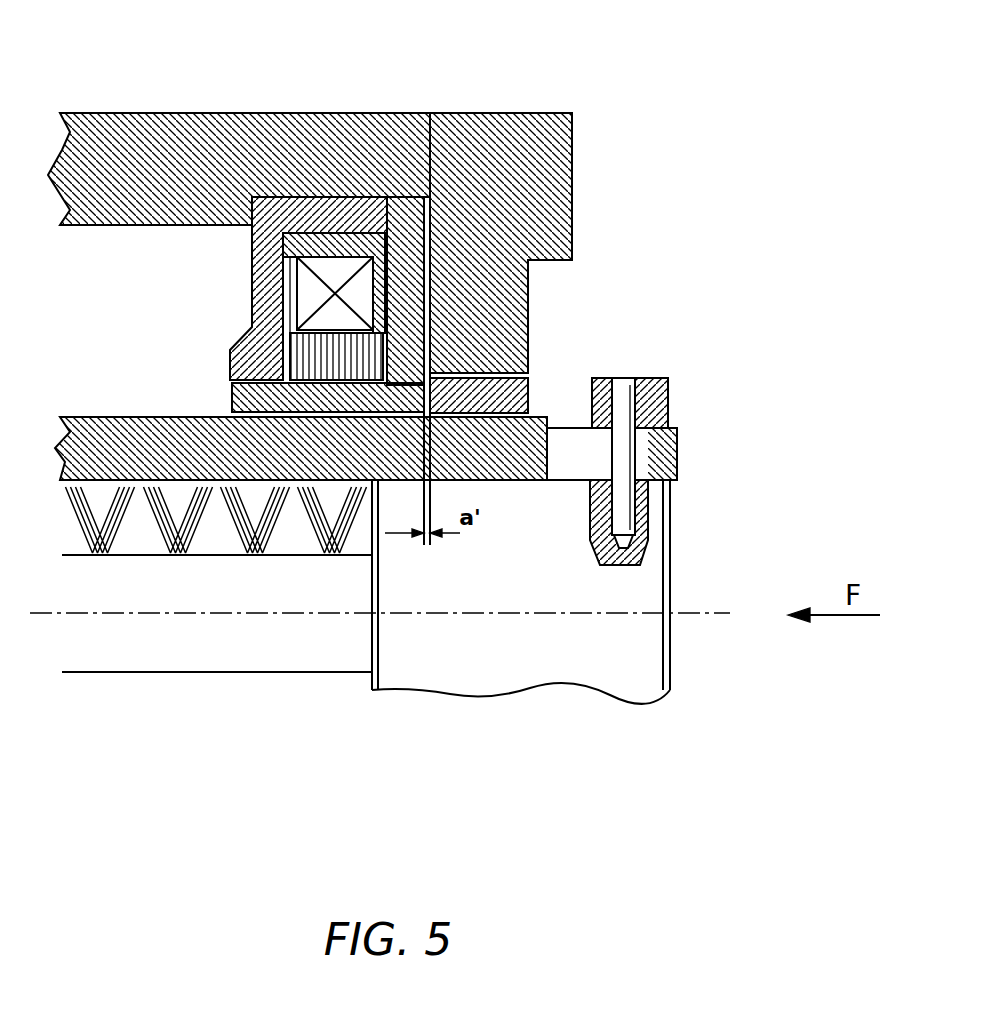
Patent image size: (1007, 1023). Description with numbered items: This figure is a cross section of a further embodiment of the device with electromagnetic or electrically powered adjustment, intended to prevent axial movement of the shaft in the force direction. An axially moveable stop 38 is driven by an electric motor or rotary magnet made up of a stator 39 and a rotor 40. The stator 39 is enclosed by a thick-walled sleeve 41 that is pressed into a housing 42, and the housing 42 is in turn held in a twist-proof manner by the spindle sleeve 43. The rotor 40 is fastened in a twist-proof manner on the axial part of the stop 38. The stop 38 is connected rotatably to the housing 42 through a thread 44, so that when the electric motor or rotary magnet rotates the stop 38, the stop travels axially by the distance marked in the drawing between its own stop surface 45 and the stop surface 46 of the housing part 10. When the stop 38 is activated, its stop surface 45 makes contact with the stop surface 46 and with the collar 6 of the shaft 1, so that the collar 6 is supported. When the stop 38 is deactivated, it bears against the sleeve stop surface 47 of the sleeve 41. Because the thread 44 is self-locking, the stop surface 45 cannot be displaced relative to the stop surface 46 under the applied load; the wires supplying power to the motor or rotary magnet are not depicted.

The shaft 1 is at (505, 483).
The collar 6 is at (505, 413).
The housing part 10 is at (573, 170).
The axially moveable stop 38 is at (375, 373).
The stator 39 is at (370, 283).
The rotor 40 is at (523, 397).
The thick-walled sleeve 41 is at (293, 212).
The housing 42 is at (390, 230).
The spindle sleeve 43 is at (262, 140).
The thread 44 is at (440, 195).
The stop surface 45 is at (385, 325).
The stop surface 46 is at (400, 355).
The sleeve stop surface 47 is at (429, 232).